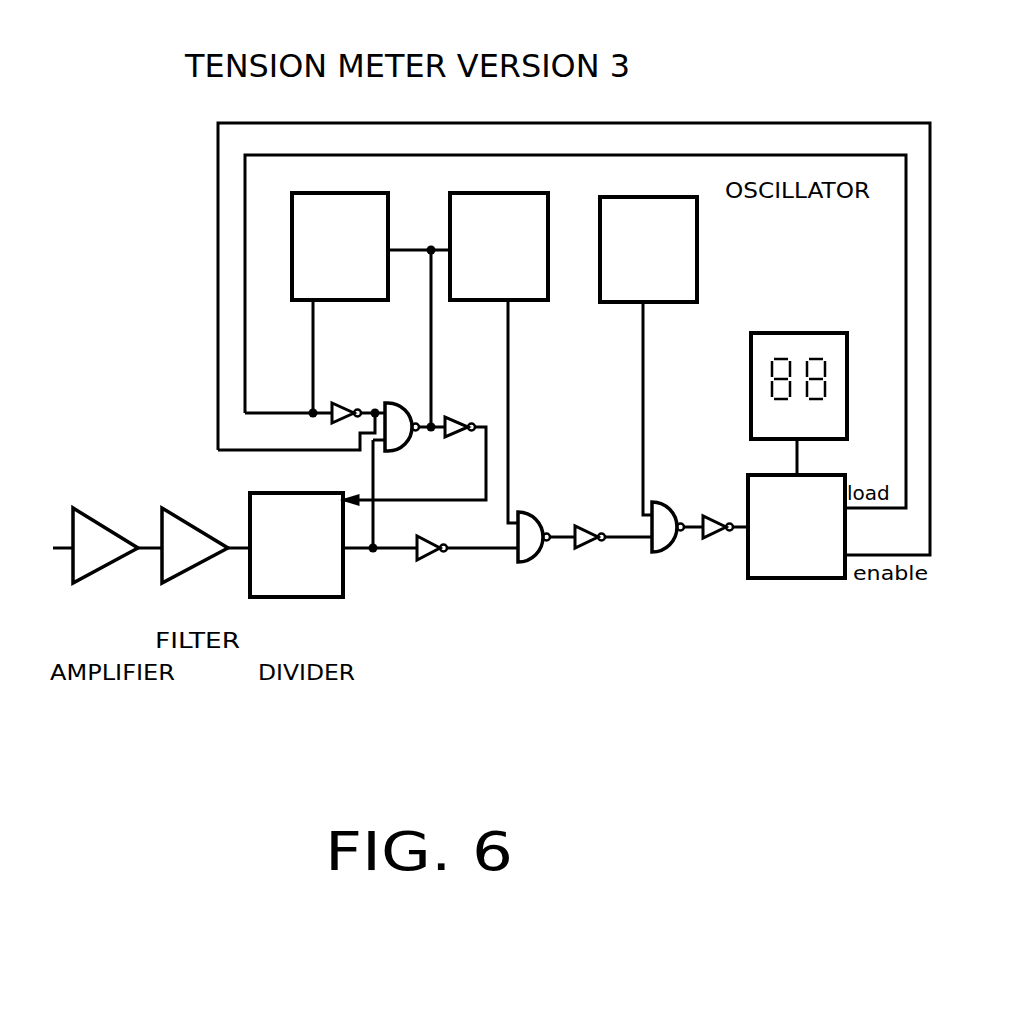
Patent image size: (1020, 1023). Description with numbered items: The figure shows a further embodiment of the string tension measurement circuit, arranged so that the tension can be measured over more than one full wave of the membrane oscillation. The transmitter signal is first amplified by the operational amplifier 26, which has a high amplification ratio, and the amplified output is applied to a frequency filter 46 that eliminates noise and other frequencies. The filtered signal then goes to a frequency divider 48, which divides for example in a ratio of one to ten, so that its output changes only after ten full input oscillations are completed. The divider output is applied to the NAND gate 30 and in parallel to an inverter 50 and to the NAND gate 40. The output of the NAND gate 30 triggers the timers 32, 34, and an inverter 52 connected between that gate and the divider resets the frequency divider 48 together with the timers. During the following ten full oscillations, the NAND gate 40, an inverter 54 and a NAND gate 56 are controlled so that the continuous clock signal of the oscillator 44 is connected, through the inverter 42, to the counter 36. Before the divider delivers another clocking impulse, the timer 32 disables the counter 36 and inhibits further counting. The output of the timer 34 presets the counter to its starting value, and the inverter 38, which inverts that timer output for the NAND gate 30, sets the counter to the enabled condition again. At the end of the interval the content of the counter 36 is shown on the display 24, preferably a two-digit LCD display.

The display 24 is at (800, 333).
The operational amplifier 26 is at (88, 577).
The NAND gate 30 is at (387, 403).
The timer 32 is at (483, 300).
The timer 34 is at (345, 300).
The counter 36 is at (807, 578).
The inverter 38 is at (340, 400).
The NAND gate 40 is at (523, 562).
The inverter 42 is at (712, 545).
The oscillator 44 is at (697, 265).
The frequency filter 46 is at (185, 577).
The frequency divider 48 is at (322, 597).
The inverter 50 is at (425, 560).
The inverter 52 is at (456, 410).
The inverter 54 is at (585, 560).
The NAND gate 56 is at (660, 552).